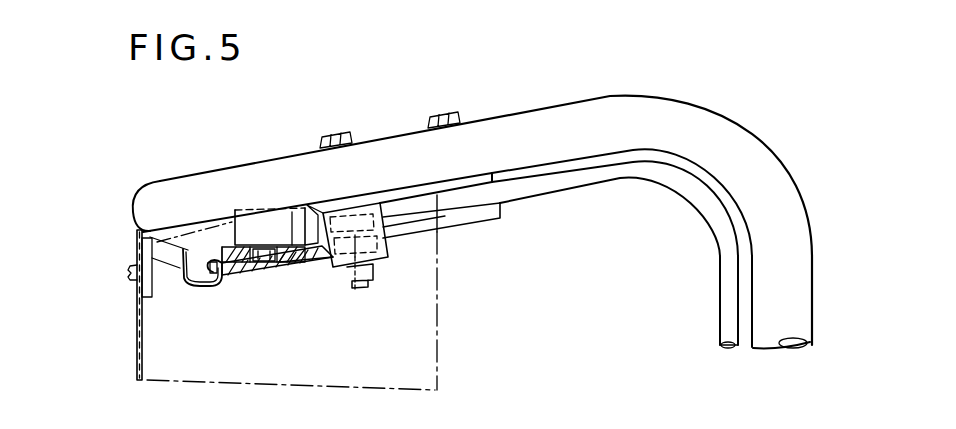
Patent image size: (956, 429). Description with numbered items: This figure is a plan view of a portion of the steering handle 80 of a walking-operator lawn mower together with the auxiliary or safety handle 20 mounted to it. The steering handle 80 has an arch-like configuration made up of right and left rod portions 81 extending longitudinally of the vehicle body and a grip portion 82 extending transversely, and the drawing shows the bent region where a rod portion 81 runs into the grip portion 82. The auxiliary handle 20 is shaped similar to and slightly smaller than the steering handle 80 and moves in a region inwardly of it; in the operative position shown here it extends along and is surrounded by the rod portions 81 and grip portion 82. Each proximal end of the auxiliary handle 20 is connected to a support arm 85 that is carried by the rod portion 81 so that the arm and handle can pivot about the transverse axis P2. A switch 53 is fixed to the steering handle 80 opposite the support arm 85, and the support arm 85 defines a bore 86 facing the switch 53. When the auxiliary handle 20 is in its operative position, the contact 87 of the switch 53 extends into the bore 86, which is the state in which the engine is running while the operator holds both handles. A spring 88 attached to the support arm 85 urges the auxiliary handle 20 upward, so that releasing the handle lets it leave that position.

The steering handle 80 is at (750, 140).
The rod portion 81 is at (407, 143).
The grip portion 82 is at (795, 275).
The auxiliary handle 20 is at (672, 193).
The switch 53 is at (242, 235).
The support arm 85 is at (318, 276).
The bore 86 is at (257, 277).
The contact 87 is at (267, 274).
The spring 88 is at (182, 269).
The transverse axis P2 is at (367, 293).